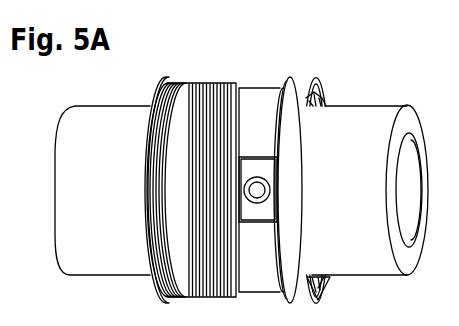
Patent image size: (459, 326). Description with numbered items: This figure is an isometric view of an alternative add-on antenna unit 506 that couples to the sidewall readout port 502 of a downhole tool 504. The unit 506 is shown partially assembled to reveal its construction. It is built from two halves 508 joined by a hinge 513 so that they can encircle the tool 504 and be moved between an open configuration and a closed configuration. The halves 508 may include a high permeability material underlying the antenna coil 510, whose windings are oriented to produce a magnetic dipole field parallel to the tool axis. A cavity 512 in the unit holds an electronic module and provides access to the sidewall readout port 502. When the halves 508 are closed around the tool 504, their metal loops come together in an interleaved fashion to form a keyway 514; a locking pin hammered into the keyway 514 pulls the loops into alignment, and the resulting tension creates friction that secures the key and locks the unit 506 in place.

The sidewall readout port 502 is at (254, 202).
The downhole tool 504 is at (92, 106).
The add-on antenna unit 506 is at (163, 79).
The halves 508 is at (278, 87).
The antenna coil 510 is at (204, 82).
The cavity 512 is at (259, 150).
The hinge 513 is at (316, 277).
The keyway 514 is at (348, 61).